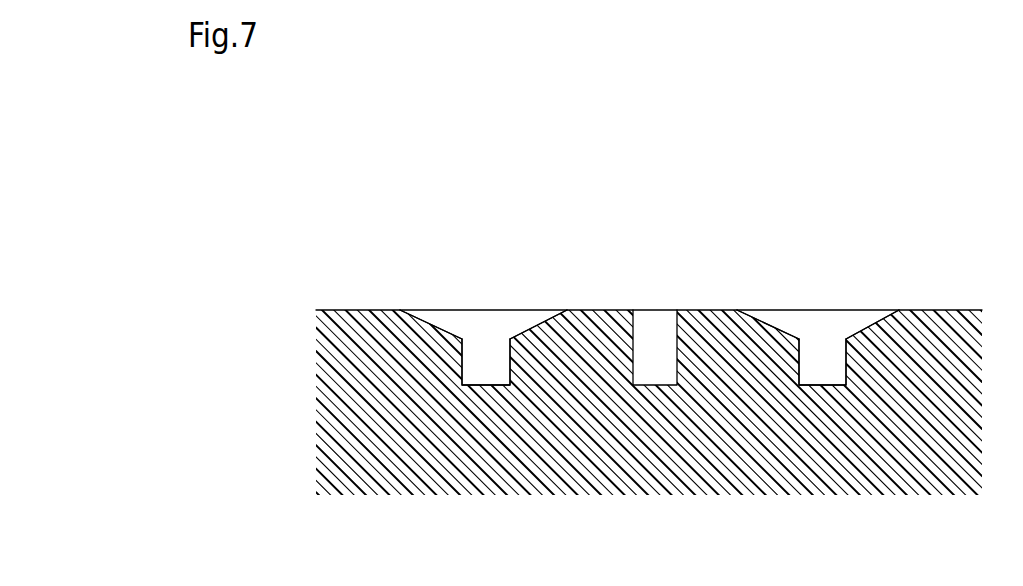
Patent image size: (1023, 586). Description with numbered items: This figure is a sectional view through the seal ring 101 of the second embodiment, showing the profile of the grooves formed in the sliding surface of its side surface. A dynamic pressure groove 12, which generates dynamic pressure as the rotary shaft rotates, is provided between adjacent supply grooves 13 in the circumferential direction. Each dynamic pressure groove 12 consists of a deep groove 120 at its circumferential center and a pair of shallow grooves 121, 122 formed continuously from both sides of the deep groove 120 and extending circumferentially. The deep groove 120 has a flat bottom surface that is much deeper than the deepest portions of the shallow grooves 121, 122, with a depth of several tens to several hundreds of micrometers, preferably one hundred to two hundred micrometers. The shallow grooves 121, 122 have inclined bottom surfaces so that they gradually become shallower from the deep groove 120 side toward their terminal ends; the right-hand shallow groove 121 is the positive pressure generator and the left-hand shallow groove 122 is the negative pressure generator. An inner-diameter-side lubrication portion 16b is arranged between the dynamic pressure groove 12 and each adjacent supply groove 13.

The seal ring 101 is at (370, 310).
The dynamic pressure groove 12 is at (572, 211).
The deep groove 120 is at (482, 358).
The shallow groove 121 is at (533, 325).
The shallow groove 122 is at (435, 325).
The supply groove 13 is at (670, 347).
The inner-diameter-side lubrication portion 16b is at (923, 312).